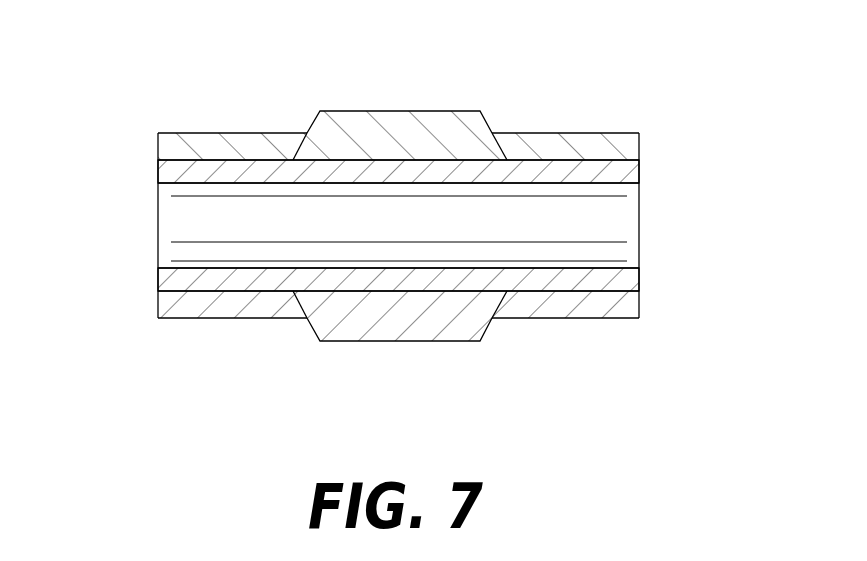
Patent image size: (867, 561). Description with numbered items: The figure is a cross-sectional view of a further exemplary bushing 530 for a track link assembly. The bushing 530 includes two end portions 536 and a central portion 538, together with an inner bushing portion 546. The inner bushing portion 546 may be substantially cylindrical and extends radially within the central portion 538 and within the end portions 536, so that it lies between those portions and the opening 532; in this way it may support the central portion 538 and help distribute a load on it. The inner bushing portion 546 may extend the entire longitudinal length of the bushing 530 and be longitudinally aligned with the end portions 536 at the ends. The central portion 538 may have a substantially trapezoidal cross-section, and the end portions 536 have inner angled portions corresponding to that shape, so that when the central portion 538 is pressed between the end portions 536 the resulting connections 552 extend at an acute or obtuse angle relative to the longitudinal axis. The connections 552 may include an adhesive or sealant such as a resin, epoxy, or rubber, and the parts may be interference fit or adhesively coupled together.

The bushing 530 is at (707, 112).
The opening 532 is at (633, 222).
The end portions 536 is at (195, 138).
The central portion 538 is at (410, 125).
The inner bushing portion 546 is at (633, 169).
The connections 552 is at (296, 137).